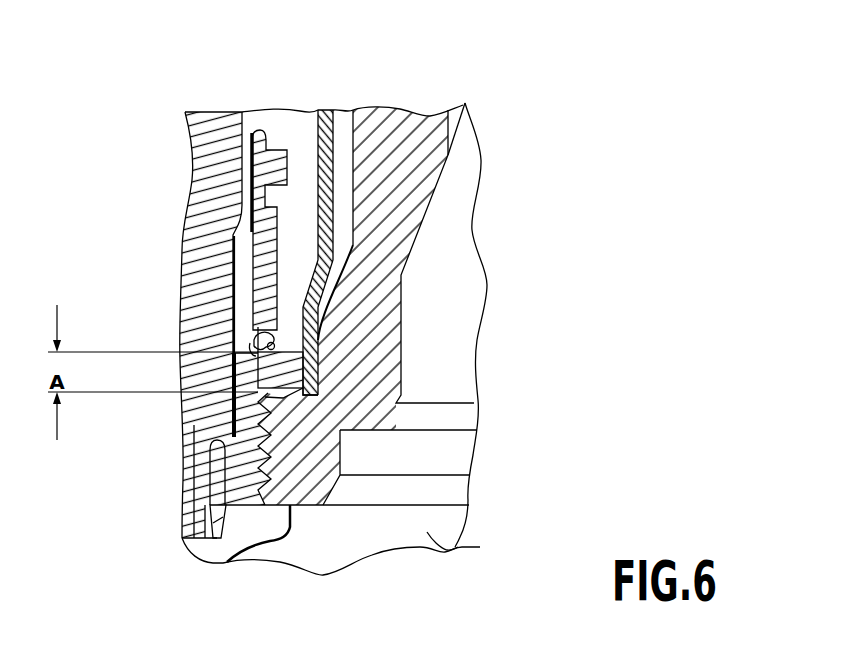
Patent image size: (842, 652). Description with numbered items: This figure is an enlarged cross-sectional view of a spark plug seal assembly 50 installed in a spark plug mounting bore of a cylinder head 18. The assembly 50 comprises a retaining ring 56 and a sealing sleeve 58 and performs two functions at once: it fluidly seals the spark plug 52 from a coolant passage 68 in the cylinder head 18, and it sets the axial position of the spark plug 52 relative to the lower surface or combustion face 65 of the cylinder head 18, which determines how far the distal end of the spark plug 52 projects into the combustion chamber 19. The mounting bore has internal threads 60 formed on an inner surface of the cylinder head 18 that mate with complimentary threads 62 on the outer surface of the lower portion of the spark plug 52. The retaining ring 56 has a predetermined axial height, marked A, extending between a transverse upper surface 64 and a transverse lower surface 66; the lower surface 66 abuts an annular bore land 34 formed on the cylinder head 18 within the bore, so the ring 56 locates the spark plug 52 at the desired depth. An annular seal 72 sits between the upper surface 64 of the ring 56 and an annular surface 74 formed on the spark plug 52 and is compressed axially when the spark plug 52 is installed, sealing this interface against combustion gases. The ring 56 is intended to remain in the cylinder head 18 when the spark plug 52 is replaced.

The cylinder head 18 is at (417, 140).
The combustion chamber 19 is at (456, 547).
The annular bore land 34 is at (234, 422).
The spark plug seal assembly 50 is at (351, 337).
The spark plug 52 is at (203, 123).
The retaining ring 56 is at (258, 350).
The sealing sleeve 58 is at (322, 159).
The internal threads 60 is at (282, 440).
The complimentary threads 62 is at (228, 467).
The transverse upper surface 64 is at (275, 335).
The combustion face 65 is at (224, 562).
The transverse lower surface 66 is at (302, 405).
The coolant passage 68 is at (345, 240).
The annular seal 72 is at (260, 336).
The annular surface 74 is at (265, 336).